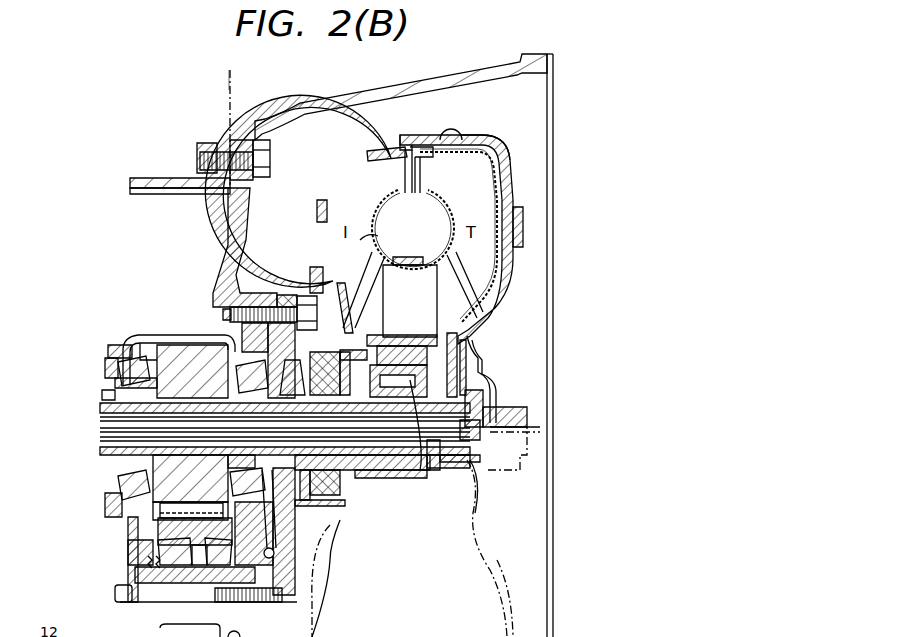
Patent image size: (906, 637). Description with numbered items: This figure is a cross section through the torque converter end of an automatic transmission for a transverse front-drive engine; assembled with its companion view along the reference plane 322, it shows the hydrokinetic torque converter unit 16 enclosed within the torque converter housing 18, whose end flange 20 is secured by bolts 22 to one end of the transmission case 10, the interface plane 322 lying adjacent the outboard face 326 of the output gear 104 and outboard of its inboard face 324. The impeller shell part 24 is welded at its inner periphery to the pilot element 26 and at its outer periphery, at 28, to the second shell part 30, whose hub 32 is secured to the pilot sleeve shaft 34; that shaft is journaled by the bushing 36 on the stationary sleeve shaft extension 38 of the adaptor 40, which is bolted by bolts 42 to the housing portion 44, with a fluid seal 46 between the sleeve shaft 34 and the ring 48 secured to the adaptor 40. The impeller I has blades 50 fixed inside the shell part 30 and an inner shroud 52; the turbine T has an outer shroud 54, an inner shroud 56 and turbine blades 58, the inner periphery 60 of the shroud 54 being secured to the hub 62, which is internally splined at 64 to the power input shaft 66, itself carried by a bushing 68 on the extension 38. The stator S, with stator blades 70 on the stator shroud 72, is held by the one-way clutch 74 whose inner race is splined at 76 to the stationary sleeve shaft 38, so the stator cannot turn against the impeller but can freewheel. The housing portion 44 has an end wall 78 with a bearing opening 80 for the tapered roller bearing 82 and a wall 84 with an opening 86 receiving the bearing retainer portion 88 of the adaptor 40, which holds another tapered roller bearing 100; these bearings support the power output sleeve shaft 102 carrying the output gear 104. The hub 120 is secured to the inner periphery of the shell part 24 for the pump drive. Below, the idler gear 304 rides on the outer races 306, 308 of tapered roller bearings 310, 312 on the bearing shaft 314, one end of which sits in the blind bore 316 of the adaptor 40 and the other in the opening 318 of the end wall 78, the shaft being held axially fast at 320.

The transmission case 10 is at (162, 178).
The hydrokinetic torque converter unit 16 is at (504, 193).
The torque converter housing 18 is at (368, 92).
The end flange 20 is at (240, 136).
The bolts 22 is at (268, 163).
The impeller shell part 24 is at (470, 138).
The pilot element 26 is at (525, 413).
The weld location 28 is at (451, 130).
The second shell part 30 is at (342, 178).
The hub 32 is at (357, 322).
The pilot sleeve shaft 34 is at (348, 330).
The bushing 36 is at (350, 470).
The stationary sleeve shaft extension 38 is at (442, 460).
The adaptor 40 is at (282, 293).
The bolts 42 is at (310, 300).
The housing portion 44 is at (180, 340).
The fluid seal 46 is at (340, 490).
The ring 48 is at (330, 512).
The impeller blades 50 is at (350, 205).
The inner shroud 52 is at (383, 234).
The outer shroud 54 is at (468, 168).
The inner shroud 56 is at (443, 220).
The turbine blades 58 is at (424, 168).
The inner periphery 60 is at (462, 360).
The hub 62 is at (458, 465).
The internal spline 64 is at (480, 440).
The power input shaft 66 is at (420, 475).
The bushing 68 is at (370, 470).
The stator blades 70 is at (420, 280).
The stator shroud 72 is at (420, 338).
The one-way clutch 74 is at (483, 382).
The spline 76 is at (405, 478).
The end wall 78 is at (106, 360).
The bearing opening 80 is at (115, 350).
The tapered roller bearing 82 is at (128, 372).
The wall 84 is at (218, 318).
The opening 86 is at (270, 345).
The bearing retainer portion 88 is at (225, 356).
The tapered roller bearing 100 is at (178, 345).
The power output sleeve shaft 102 is at (105, 395).
The output gear 104 is at (170, 355).
The hub 120 is at (475, 410).
The idler gear 304 is at (175, 565).
The outer race 306 is at (198, 565).
The outer race 308 is at (165, 535).
The tapered roller bearing 310 is at (226, 570).
The tapered roller bearing 312 is at (148, 562).
The bearing shaft 314 is at (140, 578).
The blind bore 316 is at (258, 598).
The opening 318 is at (128, 555).
The axial fastening means 320 is at (112, 595).
The interface plane 322 is at (232, 88).
The inboard face 324 is at (130, 480).
The outboard face 326 is at (330, 530).